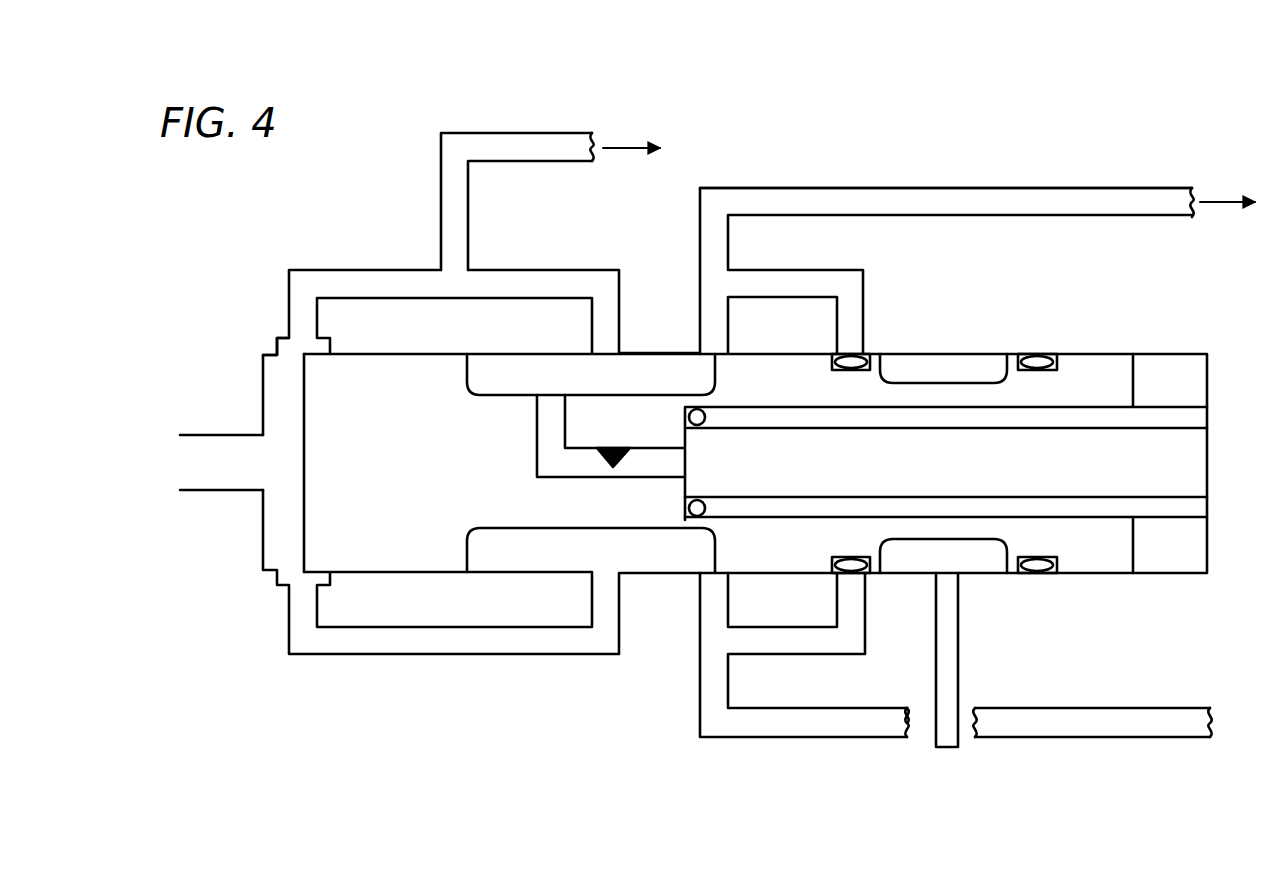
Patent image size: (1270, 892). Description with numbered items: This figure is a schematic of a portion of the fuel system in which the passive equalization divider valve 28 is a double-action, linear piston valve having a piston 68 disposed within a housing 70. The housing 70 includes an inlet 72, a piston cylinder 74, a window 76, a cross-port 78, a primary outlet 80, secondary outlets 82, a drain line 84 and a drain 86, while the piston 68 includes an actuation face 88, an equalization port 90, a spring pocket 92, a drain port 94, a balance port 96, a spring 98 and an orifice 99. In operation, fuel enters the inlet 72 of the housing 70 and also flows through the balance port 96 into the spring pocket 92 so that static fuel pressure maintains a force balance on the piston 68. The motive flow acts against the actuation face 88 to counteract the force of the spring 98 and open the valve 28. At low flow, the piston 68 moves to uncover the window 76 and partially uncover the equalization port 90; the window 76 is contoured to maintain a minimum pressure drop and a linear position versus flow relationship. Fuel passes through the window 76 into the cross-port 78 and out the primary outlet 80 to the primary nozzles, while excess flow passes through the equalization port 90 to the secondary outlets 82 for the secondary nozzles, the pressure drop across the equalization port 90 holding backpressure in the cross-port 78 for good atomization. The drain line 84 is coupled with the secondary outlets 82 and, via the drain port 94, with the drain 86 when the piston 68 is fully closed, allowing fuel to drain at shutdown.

The passive equalization divider valve 28 is at (955, 130).
The piston 68 is at (392, 474).
The housing 70 is at (392, 711).
The inlet 72 is at (218, 492).
The piston cylinder 74 is at (448, 352).
The window 76 is at (287, 337).
The cross-port 78 is at (407, 278).
The primary outlet 80 is at (510, 133).
The secondary outlets 82 is at (940, 187).
The drain line 84 is at (853, 318).
The drain 86 is at (943, 660).
The actuation face 88 is at (304, 518).
The equalization port 90 is at (498, 540).
The spring pocket 92 is at (890, 418).
The drain port 94 is at (953, 557).
The balance port 96 is at (545, 433).
The spring 98 is at (707, 418).
The orifice 99 is at (620, 449).